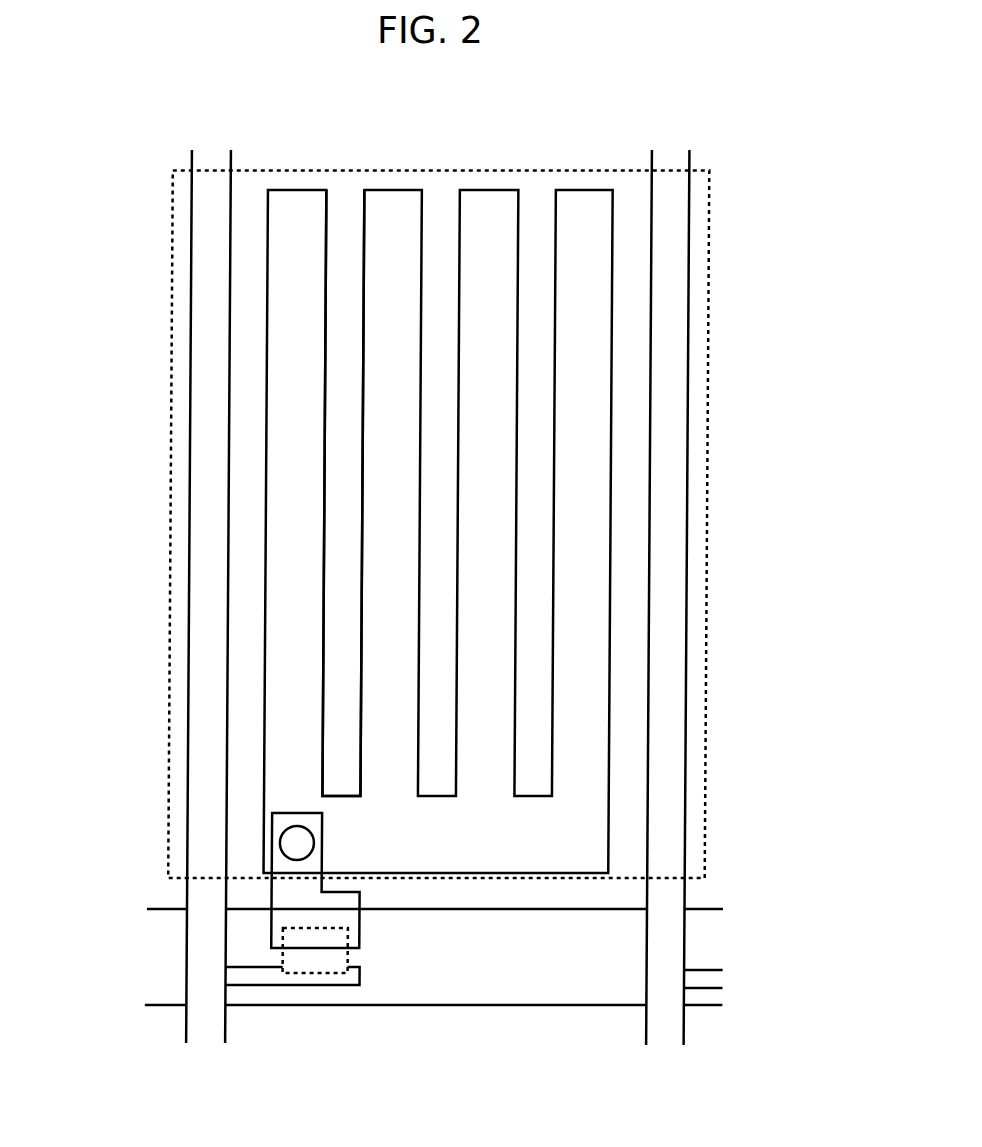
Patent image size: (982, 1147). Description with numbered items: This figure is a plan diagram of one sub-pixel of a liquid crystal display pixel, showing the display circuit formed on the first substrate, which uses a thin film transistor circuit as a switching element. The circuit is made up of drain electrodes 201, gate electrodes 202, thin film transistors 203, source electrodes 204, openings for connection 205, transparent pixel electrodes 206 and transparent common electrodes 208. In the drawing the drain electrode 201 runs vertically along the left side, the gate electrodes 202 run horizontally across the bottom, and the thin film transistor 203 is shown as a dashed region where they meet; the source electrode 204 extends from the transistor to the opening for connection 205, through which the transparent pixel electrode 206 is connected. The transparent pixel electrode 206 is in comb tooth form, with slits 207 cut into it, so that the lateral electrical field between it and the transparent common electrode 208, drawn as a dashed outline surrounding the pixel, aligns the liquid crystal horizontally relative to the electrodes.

The drain electrode 201 is at (207, 943).
The gate electrode 202 is at (417, 967).
The thin film transistor 203 is at (313, 958).
The source electrode 204 is at (293, 898).
The opening for connection 205 is at (297, 845).
The transparent pixel electrode 206 is at (292, 698).
The slit 207 is at (343, 567).
The transparent common electrode 208 is at (707, 528).